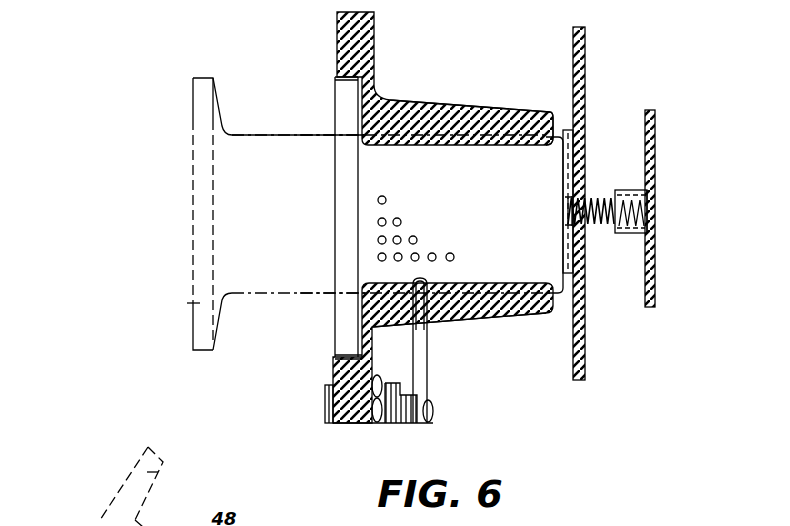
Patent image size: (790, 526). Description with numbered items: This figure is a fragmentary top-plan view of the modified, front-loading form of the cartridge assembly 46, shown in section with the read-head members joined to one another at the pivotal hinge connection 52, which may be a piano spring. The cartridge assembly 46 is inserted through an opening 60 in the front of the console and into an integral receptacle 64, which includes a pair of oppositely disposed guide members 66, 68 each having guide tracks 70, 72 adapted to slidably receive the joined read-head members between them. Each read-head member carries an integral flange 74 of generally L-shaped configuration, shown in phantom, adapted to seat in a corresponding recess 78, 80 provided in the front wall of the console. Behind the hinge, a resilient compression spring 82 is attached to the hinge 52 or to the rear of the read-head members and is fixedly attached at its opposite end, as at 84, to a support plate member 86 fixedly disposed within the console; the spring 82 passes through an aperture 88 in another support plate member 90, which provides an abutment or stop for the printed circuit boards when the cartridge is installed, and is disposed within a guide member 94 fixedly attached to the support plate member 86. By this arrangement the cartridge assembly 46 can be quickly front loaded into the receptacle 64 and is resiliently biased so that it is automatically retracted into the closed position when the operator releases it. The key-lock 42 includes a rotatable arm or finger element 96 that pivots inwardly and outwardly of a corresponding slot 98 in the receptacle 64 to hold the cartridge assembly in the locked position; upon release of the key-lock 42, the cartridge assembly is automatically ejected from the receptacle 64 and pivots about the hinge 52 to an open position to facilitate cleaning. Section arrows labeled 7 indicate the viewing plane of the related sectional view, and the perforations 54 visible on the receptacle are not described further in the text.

The section line 7- 7 is at (178, 210).
The key-lock 42 is at (325, 410).
The cartridge assembly 46 is at (239, 124).
The pivotal hinge connection 52 is at (574, 152).
The perforations 54 is at (451, 262).
The opening 60 is at (357, 348).
The receptacle 64 is at (407, 95).
The guide member 66 is at (468, 113).
The guide member 68 is at (541, 315).
The guide track 70 is at (541, 110).
The guide track 72 is at (529, 318).
The integral flange 74 is at (190, 303).
The recess 78 is at (368, 135).
The recess 80 is at (365, 297).
The resilient compression spring 82 is at (586, 230).
The spring attachment point 84 is at (650, 232).
The support plate member 86 is at (655, 295).
The aperture 88 is at (583, 232).
The support plate member 90 is at (585, 62).
The guide member 94 is at (618, 190).
The rotatable arm or finger element 96 is at (430, 385).
The slot 98 is at (428, 320).